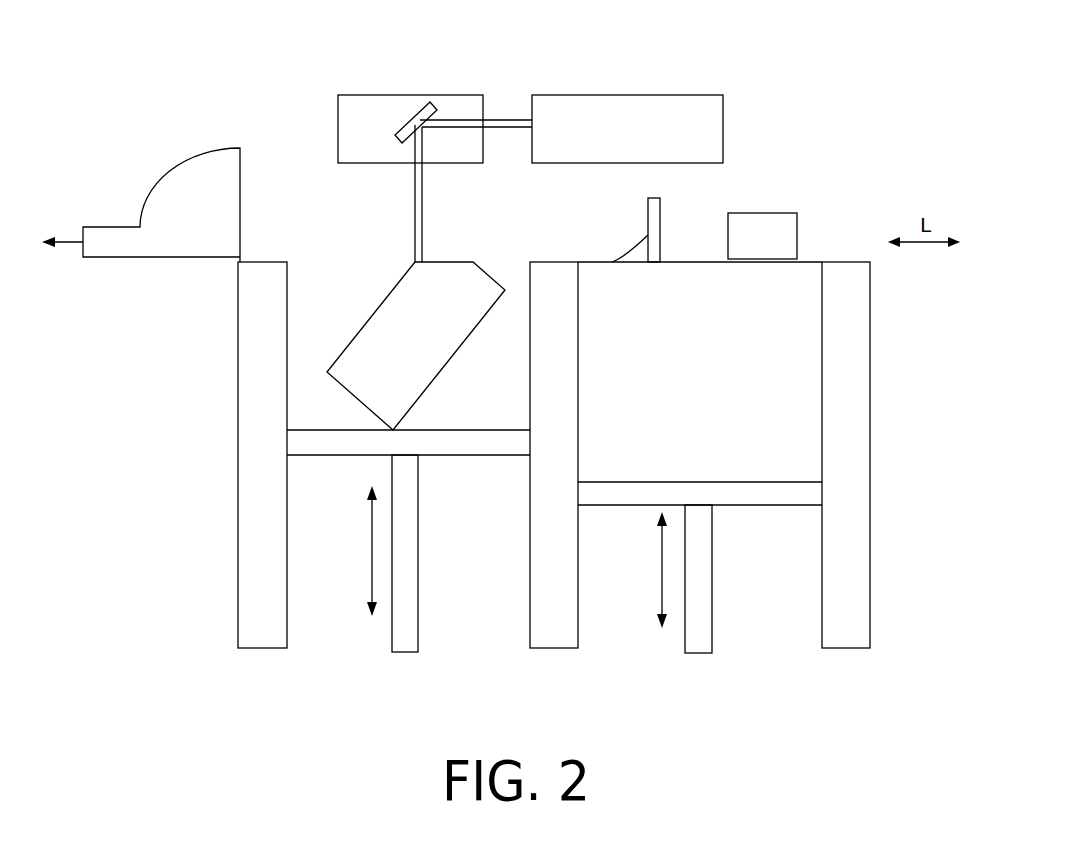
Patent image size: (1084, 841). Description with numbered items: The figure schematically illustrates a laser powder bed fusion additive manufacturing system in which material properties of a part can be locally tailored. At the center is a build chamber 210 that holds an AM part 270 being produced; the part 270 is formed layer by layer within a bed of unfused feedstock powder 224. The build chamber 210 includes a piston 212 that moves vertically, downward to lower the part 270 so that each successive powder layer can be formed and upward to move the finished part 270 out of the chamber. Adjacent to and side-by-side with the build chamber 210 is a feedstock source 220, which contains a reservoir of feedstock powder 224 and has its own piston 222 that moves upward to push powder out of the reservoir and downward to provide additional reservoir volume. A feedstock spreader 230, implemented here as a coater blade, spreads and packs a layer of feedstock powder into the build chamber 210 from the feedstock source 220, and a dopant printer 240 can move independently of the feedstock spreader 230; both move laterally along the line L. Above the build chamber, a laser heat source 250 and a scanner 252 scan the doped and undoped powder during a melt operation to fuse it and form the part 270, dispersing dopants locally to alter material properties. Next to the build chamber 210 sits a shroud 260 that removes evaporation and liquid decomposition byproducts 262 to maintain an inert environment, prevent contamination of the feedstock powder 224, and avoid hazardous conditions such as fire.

The build chamber 210 is at (232, 484).
The piston 212 is at (430, 462).
The feedstock source 220 is at (880, 484).
The piston 222 is at (718, 512).
The feedstock powder 224 is at (507, 410).
The feedstock spreader 230 is at (662, 212).
The dopant printer 240 is at (785, 212).
The laser heat source 250 is at (688, 96).
The scanner 252 is at (465, 96).
The shroud/air recirculation component 260 is at (180, 160).
The evaporation and/or liquid decomposition byproducts 262 is at (63, 237).
The AM part 270 is at (407, 270).